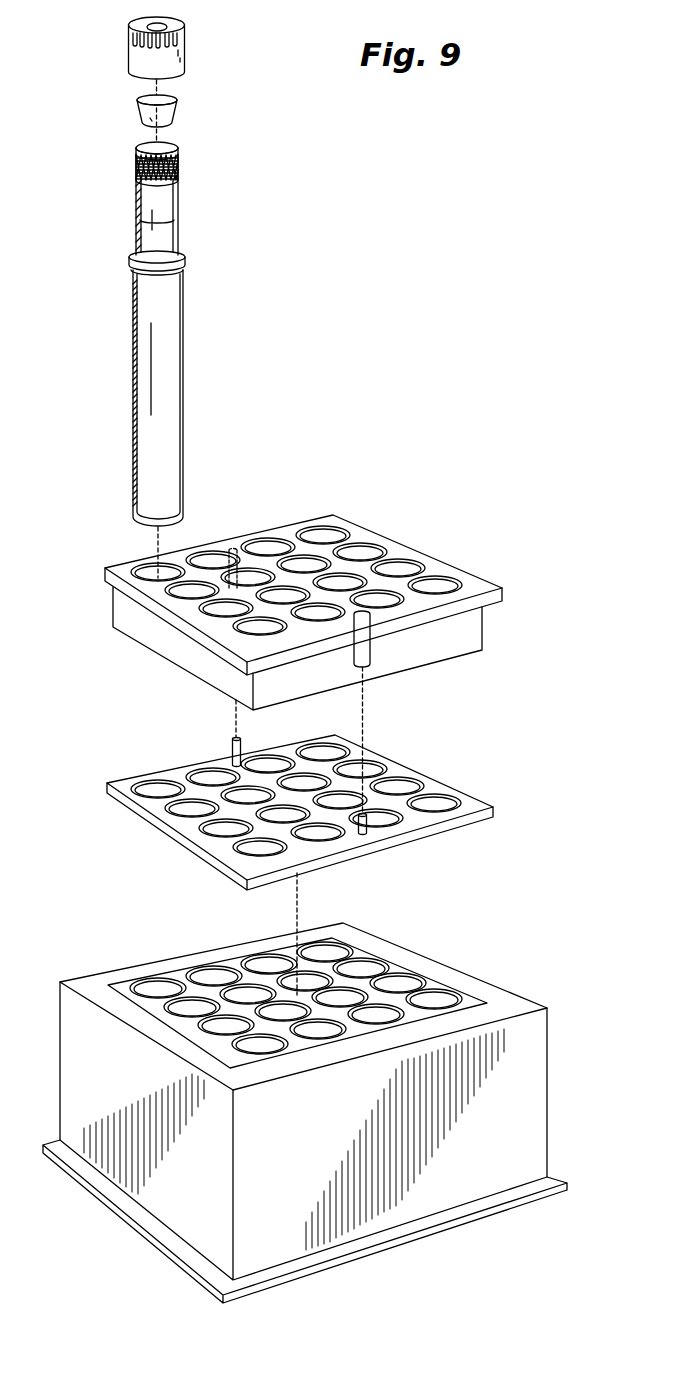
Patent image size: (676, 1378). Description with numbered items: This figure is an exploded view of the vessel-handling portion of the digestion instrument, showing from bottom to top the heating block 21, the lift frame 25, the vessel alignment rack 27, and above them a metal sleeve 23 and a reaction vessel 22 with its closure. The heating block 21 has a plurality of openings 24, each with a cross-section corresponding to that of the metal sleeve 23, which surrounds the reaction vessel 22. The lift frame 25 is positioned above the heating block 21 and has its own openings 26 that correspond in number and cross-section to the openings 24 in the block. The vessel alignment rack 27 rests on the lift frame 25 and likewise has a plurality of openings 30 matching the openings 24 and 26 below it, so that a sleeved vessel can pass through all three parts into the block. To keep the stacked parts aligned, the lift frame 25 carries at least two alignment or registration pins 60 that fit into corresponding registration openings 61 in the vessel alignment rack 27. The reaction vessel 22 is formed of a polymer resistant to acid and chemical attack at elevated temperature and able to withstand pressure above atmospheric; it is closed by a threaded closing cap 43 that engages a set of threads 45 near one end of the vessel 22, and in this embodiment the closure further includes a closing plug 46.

The heating block 21 is at (326, 1177).
The reaction vessel 22 is at (168, 240).
The metal sleeve 23 is at (170, 415).
The opening 24 is at (157, 992).
The lift frame 25 is at (390, 772).
The opening 26 is at (433, 805).
The vessel alignment rack 27 is at (392, 552).
The opening 30 is at (438, 587).
The threaded closing cap 43 is at (183, 68).
The set of threads 45 is at (182, 163).
The closing plug 46 is at (177, 107).
The registration pin 60 is at (230, 753).
The registration opening 61 is at (234, 548).